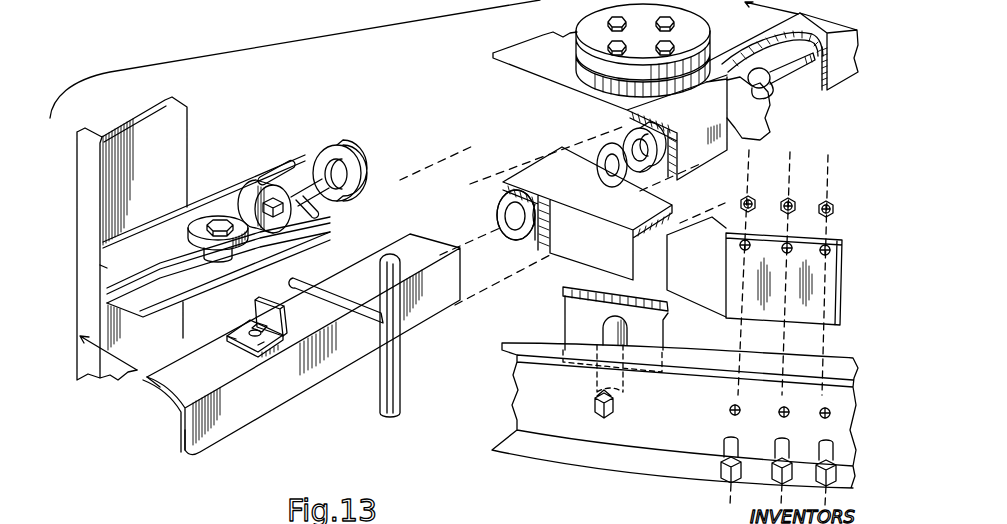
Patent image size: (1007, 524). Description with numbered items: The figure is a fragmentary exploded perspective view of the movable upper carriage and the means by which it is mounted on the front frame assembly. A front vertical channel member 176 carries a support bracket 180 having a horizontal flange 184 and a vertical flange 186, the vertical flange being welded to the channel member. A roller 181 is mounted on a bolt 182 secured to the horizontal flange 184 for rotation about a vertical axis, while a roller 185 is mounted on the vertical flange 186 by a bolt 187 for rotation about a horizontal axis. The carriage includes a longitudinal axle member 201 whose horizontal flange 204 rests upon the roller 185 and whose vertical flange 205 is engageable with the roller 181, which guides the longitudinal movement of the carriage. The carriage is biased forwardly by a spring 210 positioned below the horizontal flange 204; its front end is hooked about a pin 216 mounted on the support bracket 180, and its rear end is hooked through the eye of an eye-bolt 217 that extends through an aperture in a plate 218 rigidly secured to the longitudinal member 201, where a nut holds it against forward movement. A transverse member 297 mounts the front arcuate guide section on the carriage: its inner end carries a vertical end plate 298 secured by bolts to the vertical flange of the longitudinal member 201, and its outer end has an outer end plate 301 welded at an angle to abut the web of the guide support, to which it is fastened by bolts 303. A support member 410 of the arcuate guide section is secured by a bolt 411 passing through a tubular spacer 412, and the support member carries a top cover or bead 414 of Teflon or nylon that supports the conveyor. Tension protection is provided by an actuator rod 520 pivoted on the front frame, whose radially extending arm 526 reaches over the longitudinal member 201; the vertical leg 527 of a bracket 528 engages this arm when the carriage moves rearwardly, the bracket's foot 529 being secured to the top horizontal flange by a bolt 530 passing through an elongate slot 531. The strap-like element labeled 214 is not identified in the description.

The front vertical channel member 176 is at (183, 122).
The support bracket 180 is at (204, 191).
The bolt 182 is at (219, 222).
The roller 185 is at (271, 158).
The bolt 187 is at (279, 214).
The pin 216 is at (320, 214).
The spring 210 is at (355, 149).
The vertical flange 186 is at (105, 266).
The horizontal flange 184 is at (135, 297).
The roller 181 is at (249, 256).
The arm 526 is at (358, 318).
The actuator rod 520 is at (403, 380).
The longitudinal axle member 201 is at (297, 406).
The horizontal flange 204 is at (160, 392).
The vertical flange 205 is at (183, 428).
The vertical leg 527 is at (285, 320).
The bracket 528 is at (276, 345).
The foot 529 is at (232, 338).
The bolt 530 is at (252, 325).
The elongate slot 531 is at (262, 347).
The strap 214 is at (750, 31).
The plate 218 is at (820, 86).
The eye-bolt 217 is at (795, 79).
The vertical end plate 298 is at (528, 254).
The transverse member 297 is at (588, 250).
The outer end plate 301 is at (737, 316).
The support member 410 is at (663, 317).
The top cover or bead 414 is at (563, 292).
The tubular spacer 412 is at (603, 332).
The bolt 411 is at (596, 408).
The bolt 303 is at (779, 453).